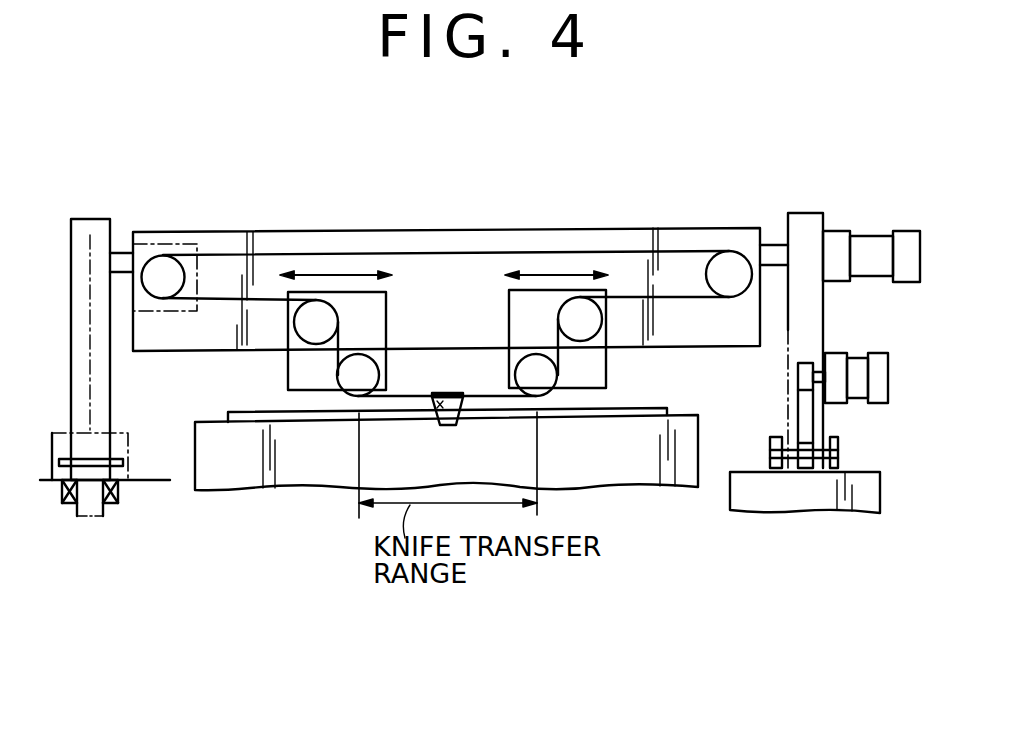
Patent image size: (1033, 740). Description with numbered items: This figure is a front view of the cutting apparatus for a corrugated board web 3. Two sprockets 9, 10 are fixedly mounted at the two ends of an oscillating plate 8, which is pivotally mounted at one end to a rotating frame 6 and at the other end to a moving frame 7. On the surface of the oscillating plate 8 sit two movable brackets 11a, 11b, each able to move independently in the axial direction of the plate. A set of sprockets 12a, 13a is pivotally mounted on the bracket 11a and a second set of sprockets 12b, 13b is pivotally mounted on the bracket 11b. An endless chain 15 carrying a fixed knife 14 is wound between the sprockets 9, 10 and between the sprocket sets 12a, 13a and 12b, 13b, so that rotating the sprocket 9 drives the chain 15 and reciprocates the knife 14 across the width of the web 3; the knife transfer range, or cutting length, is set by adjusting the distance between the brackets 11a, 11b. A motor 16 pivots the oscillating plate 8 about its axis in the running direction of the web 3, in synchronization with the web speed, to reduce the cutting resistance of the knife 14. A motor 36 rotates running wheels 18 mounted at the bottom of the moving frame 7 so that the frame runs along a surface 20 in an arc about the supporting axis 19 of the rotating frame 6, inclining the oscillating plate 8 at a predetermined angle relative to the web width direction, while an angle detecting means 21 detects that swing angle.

The corrugated board web 3 is at (247, 420).
The rotating frame 6 is at (91, 228).
The moving frame 7 is at (798, 226).
The oscillating plate 8 is at (627, 240).
The sprocket 9 is at (170, 268).
The sprocket 10 is at (727, 282).
The movable bracket 11a is at (388, 312).
The movable bracket 11b is at (510, 316).
The sprocket 12a is at (303, 320).
The sprocket 12b is at (597, 323).
The sprocket 13a is at (358, 383).
The sprocket 13b is at (540, 385).
The knife 14 is at (438, 400).
The endless chain 15 is at (436, 240).
The motor 16 is at (900, 238).
The running wheels 18 is at (775, 437).
The supporting axis 19 is at (93, 502).
The surface 20 is at (867, 472).
The angle detecting means 21 is at (118, 440).
The motor 36 is at (875, 355).